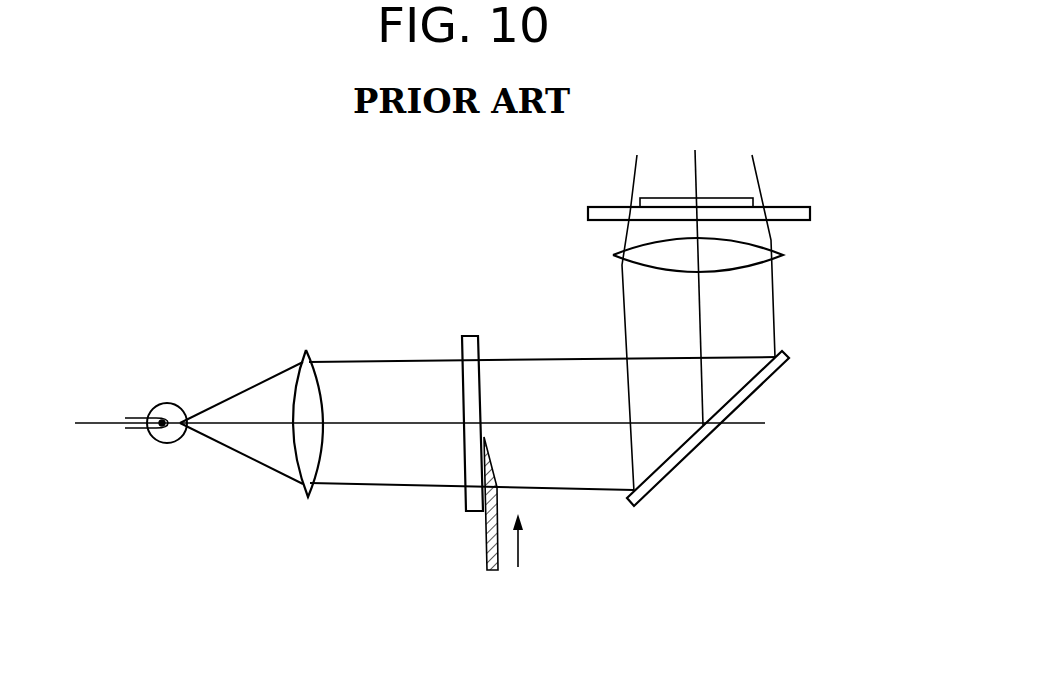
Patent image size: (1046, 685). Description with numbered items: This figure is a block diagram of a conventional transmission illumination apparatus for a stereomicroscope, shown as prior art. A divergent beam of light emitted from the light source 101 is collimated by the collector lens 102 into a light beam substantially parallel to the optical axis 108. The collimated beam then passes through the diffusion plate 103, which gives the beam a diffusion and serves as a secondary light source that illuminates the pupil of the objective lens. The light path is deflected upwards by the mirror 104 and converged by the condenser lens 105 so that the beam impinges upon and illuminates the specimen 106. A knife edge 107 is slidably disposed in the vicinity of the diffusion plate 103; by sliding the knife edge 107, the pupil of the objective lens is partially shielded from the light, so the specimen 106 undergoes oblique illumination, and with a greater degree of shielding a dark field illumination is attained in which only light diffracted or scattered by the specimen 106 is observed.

The light source 101 is at (167, 445).
The collector lens 102 is at (305, 493).
The diffusion plate 103 is at (465, 503).
The mirror 104 is at (673, 475).
The condenser lens 105 is at (783, 255).
The specimen 106 is at (722, 198).
The knife edge 107 is at (498, 565).
The optical axis 108 is at (385, 423).